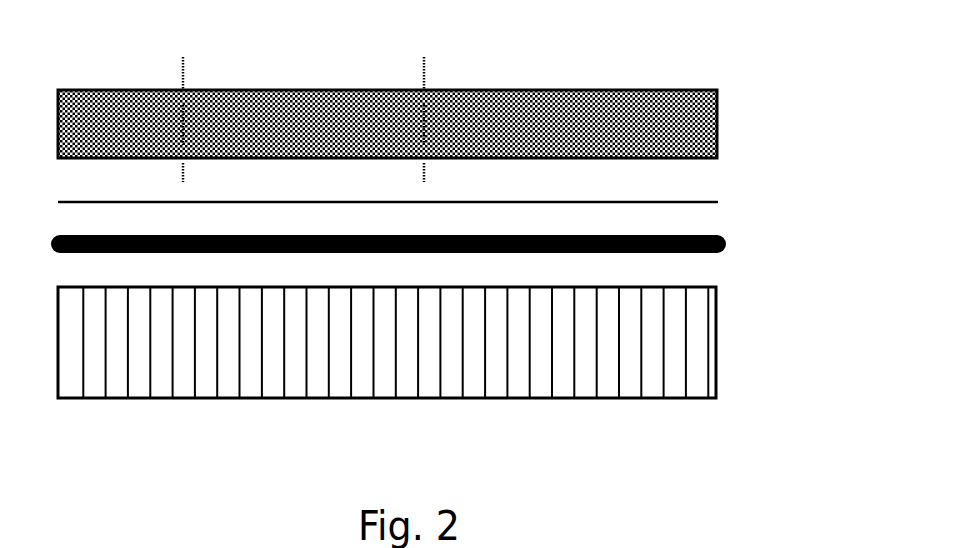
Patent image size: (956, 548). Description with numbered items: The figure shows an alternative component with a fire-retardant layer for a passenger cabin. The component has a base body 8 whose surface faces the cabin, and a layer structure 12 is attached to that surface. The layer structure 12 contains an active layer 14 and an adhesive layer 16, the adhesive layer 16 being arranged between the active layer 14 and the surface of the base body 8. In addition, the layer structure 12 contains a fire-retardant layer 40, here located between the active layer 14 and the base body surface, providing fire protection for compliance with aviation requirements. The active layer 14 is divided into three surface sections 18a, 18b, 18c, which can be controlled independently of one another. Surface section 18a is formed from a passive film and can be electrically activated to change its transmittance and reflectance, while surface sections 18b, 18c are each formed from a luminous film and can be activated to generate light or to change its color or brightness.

The base body 8 is at (717, 347).
The layer structure 12 is at (741, 153).
The active layer 14 is at (391, 100).
The adhesive layer 16 is at (718, 202).
The surface section 18a is at (123, 90).
The surface section 18b is at (285, 90).
The surface section 18c is at (472, 90).
The fire-retardant layer 40 is at (725, 243).